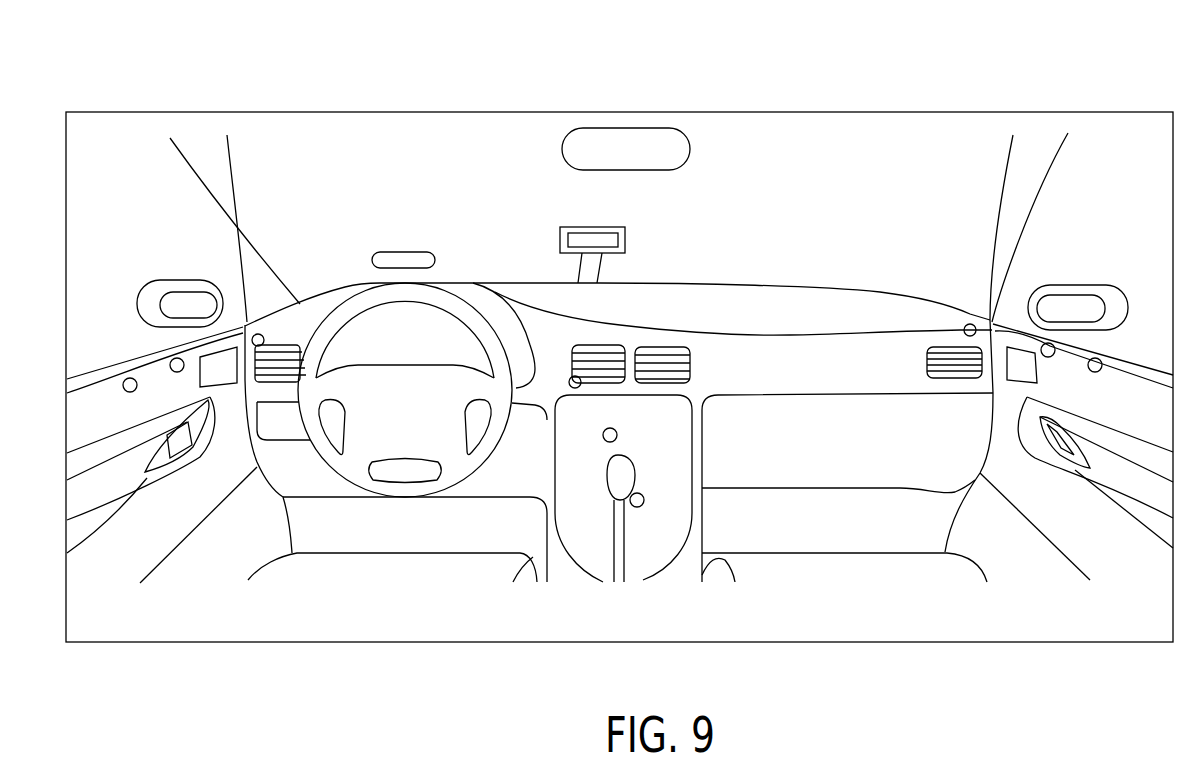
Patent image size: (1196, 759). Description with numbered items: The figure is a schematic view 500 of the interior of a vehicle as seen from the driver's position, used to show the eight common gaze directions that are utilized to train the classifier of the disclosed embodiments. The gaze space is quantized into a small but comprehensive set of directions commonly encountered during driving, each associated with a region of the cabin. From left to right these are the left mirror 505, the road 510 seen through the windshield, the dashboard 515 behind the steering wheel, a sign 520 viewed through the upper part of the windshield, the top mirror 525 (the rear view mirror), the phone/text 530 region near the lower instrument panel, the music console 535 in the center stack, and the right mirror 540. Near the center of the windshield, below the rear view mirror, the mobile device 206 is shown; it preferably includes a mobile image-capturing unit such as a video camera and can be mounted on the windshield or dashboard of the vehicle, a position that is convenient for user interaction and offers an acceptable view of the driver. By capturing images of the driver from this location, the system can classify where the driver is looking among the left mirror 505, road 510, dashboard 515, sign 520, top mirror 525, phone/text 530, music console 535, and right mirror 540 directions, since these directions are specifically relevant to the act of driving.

The vehicle interior 500 is at (868, 78).
The left mirror 505 is at (150, 284).
The road 510 is at (391, 170).
The dashboard 515 is at (385, 330).
The sign 520 is at (489, 136).
The top mirror 525 is at (628, 127).
The mobile device 206 is at (625, 238).
The phone/text 530 is at (510, 496).
The music console 535 is at (630, 458).
The right mirror 540 is at (1110, 286).